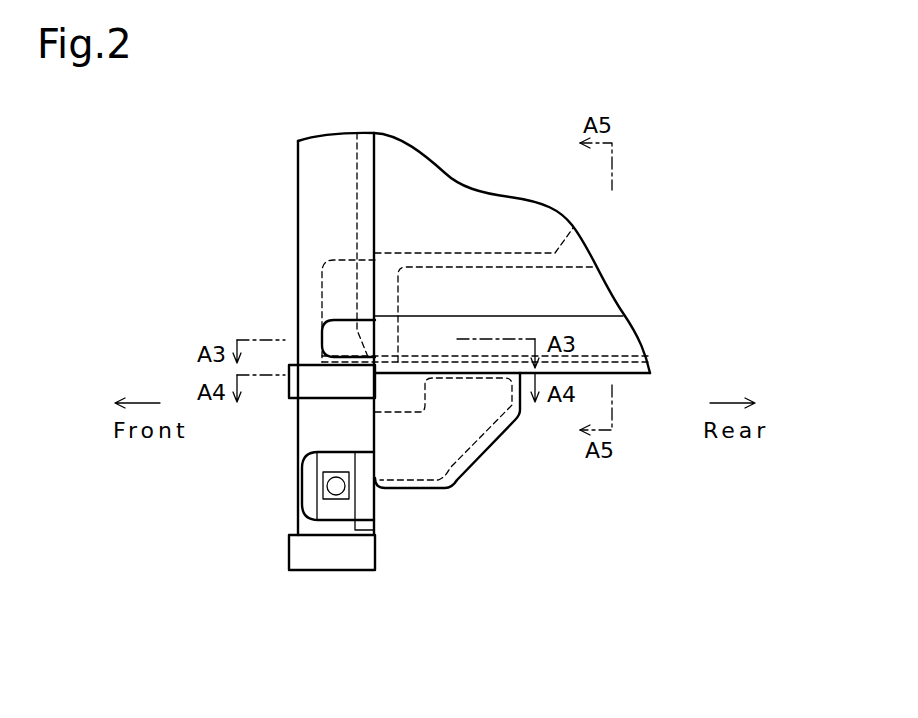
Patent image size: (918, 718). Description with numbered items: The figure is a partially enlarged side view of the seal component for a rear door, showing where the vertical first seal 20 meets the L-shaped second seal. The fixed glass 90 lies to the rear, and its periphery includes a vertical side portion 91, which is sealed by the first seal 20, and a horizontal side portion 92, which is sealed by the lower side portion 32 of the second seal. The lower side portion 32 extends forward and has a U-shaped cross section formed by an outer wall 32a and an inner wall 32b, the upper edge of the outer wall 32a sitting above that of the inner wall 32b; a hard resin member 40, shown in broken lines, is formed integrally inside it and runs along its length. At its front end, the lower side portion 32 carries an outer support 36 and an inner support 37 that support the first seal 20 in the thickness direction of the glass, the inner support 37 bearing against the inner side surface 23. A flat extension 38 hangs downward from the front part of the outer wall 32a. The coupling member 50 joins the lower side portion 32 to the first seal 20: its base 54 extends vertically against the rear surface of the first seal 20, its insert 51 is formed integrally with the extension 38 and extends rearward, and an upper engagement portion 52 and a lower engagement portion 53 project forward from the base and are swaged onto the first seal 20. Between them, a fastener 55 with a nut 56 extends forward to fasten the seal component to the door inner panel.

The first seal 20 is at (285, 181).
The inner side surface 23 is at (308, 209).
The lower side portion 32 is at (633, 387).
The outer wall 32a is at (577, 230).
The inner wall 32b is at (597, 325).
The outer support 36 is at (322, 280).
The inner support 37 is at (330, 325).
The extension 38 is at (487, 446).
The resin member 40 is at (456, 266).
The coupling member 50 is at (303, 584).
The insert 51 is at (456, 480).
The upper engagement portion 52 is at (290, 385).
The lower engagement portion 53 is at (289, 550).
The base 54 is at (375, 526).
The fastener 55 is at (302, 482).
The nut 56 is at (336, 500).
The fixed glass 90 is at (432, 190).
The vertical side portion 91 is at (357, 150).
The horizontal side portion 92 is at (643, 376).